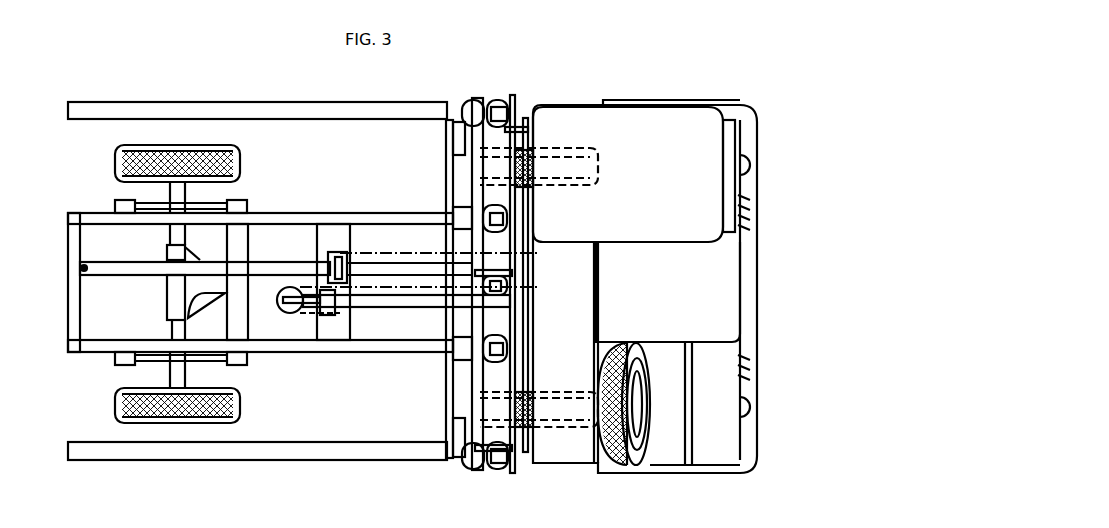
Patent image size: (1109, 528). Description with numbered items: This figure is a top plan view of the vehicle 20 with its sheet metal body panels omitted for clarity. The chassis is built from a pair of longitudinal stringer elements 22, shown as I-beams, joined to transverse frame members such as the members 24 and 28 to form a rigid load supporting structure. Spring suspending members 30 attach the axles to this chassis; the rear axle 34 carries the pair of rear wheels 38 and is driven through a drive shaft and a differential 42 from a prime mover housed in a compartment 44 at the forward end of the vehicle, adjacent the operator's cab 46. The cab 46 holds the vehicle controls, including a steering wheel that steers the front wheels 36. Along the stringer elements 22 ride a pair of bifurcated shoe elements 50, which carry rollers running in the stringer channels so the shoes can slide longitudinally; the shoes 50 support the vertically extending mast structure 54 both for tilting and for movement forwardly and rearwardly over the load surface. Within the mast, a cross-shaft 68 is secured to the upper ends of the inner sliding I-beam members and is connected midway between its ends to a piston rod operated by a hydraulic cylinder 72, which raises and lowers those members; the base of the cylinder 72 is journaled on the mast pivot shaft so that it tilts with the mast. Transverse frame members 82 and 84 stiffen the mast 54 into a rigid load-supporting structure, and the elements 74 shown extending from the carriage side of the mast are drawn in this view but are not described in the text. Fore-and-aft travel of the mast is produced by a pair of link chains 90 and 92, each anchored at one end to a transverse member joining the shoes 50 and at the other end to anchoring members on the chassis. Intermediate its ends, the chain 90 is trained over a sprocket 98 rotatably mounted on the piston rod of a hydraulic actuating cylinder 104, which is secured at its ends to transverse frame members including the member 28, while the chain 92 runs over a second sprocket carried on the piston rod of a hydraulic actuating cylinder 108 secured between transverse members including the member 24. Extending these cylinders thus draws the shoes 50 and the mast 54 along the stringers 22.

The vehicle 20 is at (561, 97).
The longitudinal stringer elements 22 is at (287, 213).
The transverse frame member 24 is at (240, 283).
The transverse frame member 28 is at (338, 340).
The spring suspending members 30 is at (115, 203).
The rear axle 34 is at (172, 333).
The front wheels 36 is at (600, 162).
The rear wheels 38 is at (240, 158).
The differential 42 is at (160, 275).
The compartment 44 is at (675, 300).
The operator's cab 46 is at (690, 110).
The bifurcated shoe elements 50 is at (457, 207).
The mast structure 54 is at (435, 157).
The cross-shaft 68 is at (470, 470).
The hydraulic cylinder 72 is at (507, 287).
The fork 74 is at (356, 104).
The transverse frame member 82 is at (447, 400).
The transverse frame member 84 is at (515, 452).
The link chain 90 is at (305, 315).
The link chain 92 is at (380, 253).
The sprocket 98 is at (283, 310).
The hydraulic actuating cylinder 104 is at (385, 308).
The hydraulic actuating cylinder 108 is at (278, 262).